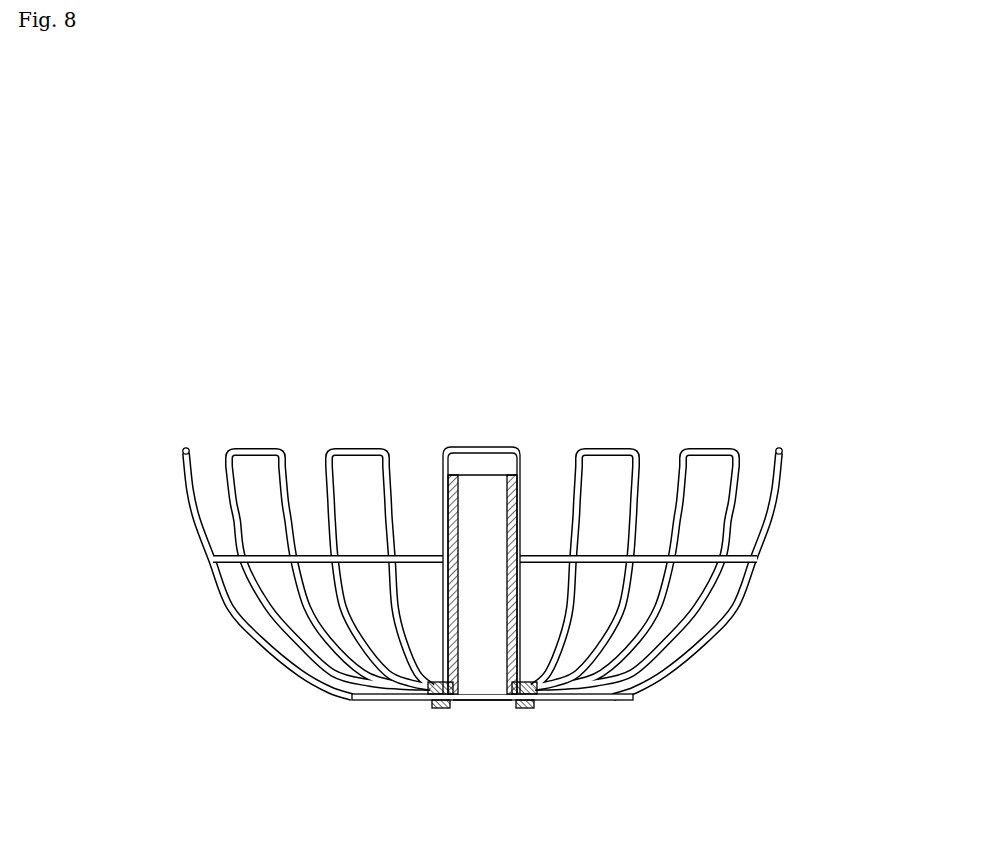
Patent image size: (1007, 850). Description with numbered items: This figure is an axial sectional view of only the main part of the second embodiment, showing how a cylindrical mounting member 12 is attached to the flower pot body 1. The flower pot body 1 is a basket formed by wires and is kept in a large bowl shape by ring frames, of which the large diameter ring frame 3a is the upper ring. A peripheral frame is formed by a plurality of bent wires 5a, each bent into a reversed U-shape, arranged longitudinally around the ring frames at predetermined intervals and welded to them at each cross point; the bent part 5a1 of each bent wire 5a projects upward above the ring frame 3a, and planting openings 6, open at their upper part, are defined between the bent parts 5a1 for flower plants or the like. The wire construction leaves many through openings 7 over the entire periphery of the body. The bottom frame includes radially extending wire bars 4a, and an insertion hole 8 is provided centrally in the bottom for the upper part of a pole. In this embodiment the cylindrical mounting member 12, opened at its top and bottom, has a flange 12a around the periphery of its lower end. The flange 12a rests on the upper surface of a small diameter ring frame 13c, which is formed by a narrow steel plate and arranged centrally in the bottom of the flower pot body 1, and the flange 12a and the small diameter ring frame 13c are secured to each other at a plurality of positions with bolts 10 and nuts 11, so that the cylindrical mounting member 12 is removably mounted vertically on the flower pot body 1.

The flower pot body 1 is at (463, 581).
The ring frame 3a is at (694, 553).
The wire bar 4a is at (399, 702).
The bent wire 5a is at (703, 658).
The bent part 5a1 is at (330, 444).
The planting opening 6 is at (210, 468).
The through opening 7 is at (366, 527).
The insertion hole 8 is at (503, 703).
The bolt 10 is at (535, 680).
The nut 11 is at (538, 705).
The cylindrical mounting member 12 is at (488, 471).
The flange 12a is at (500, 703).
The small diameter ring frame 13c is at (427, 704).